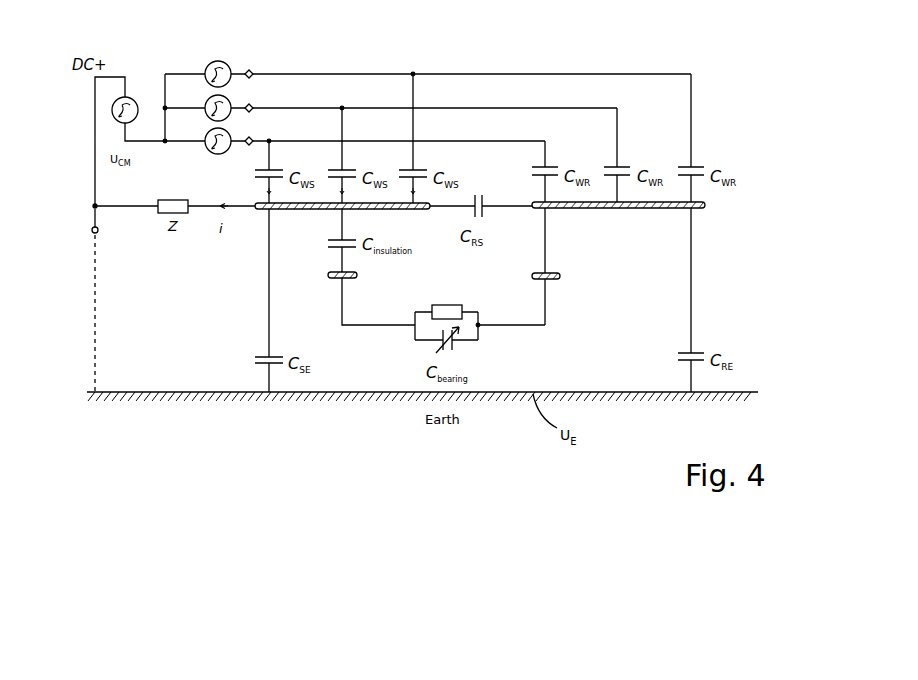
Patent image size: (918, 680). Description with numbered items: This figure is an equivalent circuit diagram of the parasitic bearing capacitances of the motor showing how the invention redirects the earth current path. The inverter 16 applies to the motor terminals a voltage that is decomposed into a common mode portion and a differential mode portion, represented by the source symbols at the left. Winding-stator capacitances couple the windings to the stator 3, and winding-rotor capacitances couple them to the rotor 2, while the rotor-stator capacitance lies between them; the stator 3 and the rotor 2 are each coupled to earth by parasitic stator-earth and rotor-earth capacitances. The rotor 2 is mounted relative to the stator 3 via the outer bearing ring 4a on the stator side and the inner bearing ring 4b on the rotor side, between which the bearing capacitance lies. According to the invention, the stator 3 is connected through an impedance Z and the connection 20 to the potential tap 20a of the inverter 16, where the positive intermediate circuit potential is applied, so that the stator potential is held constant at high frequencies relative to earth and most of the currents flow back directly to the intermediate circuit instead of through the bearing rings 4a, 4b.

The inverter 16 is at (247, 61).
The connection 20 is at (132, 209).
The potential tap 20a is at (93, 210).
The rotor 2 is at (628, 210).
The stator 3 is at (293, 211).
The outer bearing ring 4a is at (328, 279).
The inner bearing ring 4b is at (560, 281).